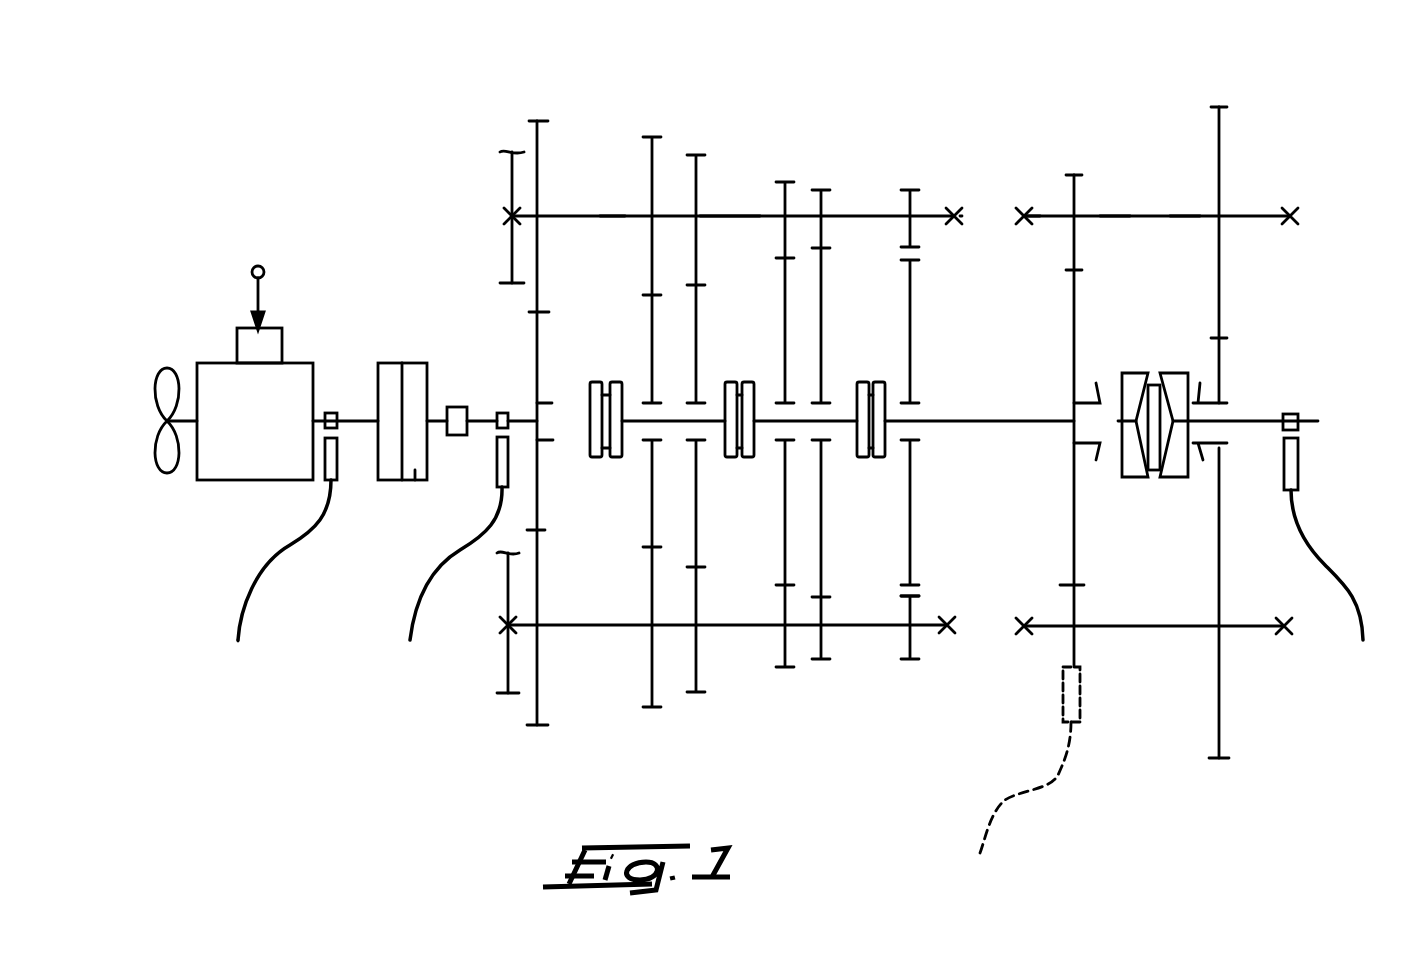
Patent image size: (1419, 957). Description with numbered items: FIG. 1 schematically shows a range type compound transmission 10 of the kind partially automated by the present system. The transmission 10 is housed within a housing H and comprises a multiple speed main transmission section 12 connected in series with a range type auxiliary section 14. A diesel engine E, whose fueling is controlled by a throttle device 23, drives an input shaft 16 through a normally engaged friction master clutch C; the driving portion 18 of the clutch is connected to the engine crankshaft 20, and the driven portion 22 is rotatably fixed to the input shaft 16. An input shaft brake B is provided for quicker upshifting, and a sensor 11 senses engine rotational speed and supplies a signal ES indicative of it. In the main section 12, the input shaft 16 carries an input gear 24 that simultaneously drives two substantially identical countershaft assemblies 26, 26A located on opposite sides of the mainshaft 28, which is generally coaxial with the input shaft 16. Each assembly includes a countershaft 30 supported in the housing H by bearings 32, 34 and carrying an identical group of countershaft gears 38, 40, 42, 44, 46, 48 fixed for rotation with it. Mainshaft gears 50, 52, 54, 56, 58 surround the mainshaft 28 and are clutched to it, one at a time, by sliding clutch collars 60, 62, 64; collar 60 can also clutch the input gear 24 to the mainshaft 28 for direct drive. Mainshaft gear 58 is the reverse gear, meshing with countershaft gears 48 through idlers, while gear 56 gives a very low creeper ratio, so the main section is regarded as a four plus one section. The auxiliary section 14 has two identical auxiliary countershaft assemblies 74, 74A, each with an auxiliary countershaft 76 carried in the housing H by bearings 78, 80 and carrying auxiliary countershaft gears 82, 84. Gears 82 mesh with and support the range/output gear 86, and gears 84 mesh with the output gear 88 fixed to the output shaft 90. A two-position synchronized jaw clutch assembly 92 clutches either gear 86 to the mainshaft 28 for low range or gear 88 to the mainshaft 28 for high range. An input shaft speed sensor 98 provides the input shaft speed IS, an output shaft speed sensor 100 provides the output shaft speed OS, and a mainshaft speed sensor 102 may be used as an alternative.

The compound transmission 10 is at (988, 194).
The engine speed sensor 11 is at (237, 618).
The main transmission section 12 is at (742, 175).
The auxiliary section 14 is at (1135, 157).
The input shaft 16 is at (480, 416).
The driving portion 18 is at (385, 468).
The engine crankshaft 20 is at (337, 414).
The driven portion 22 is at (418, 475).
The throttle device 23 is at (276, 354).
The input gear 24 is at (540, 365).
The countershaft assembly 26 is at (580, 198).
The countershaft assembly 26A is at (590, 628).
The mainshaft 28 is at (1028, 425).
The countershaft 30 is at (612, 217).
The bearing 32 is at (506, 630).
The bearing 34 is at (950, 628).
The countershaft gear 38 is at (540, 708).
The countershaft gear 40 is at (648, 700).
The countershaft gear 42 is at (697, 675).
The countershaft gear 44 is at (785, 650).
The countershaft gear 46 is at (822, 648).
The countershaft gear 48 is at (908, 650).
The mainshaft gear 50 is at (648, 510).
The mainshaft gear 52 is at (697, 512).
The mainshaft gear 54 is at (782, 548).
The mainshaft drive gear 56 is at (822, 528).
The reverse gear 58 is at (908, 552).
The sliding clutch collar 60 is at (590, 452).
The sliding clutch collar 62 is at (752, 385).
The sliding clutch collar 64 is at (862, 388).
The auxiliary countershaft assembly 74 is at (1155, 197).
The auxiliary countershaft assembly 74A is at (1156, 650).
The auxiliary countershaft 76 is at (1185, 222).
The bearing 78 is at (1022, 224).
The bearing 80 is at (1297, 212).
The auxiliary section countershaft gear 82 is at (1083, 192).
The auxiliary section countershaft gear 84 is at (1222, 152).
The range/output gear 86 is at (1072, 345).
The output gear 88 is at (1215, 348).
The transmission output shaft 90 is at (1266, 404).
The synchronized jaw clutch assembly 92 is at (1132, 496).
The input shaft speed sensor 98 is at (496, 458).
The output shaft speed sensor 100 is at (1300, 465).
The mainshaft speed sensor 102 is at (1060, 692).
The diesel engine E is at (234, 421).
The friction master clutch C is at (410, 345).
The input shaft brake B is at (458, 389).
The housing H is at (510, 180).
The engine speed signal ES is at (262, 570).
The input shaft speed IS is at (425, 597).
The output shaft speed OS is at (1372, 597).